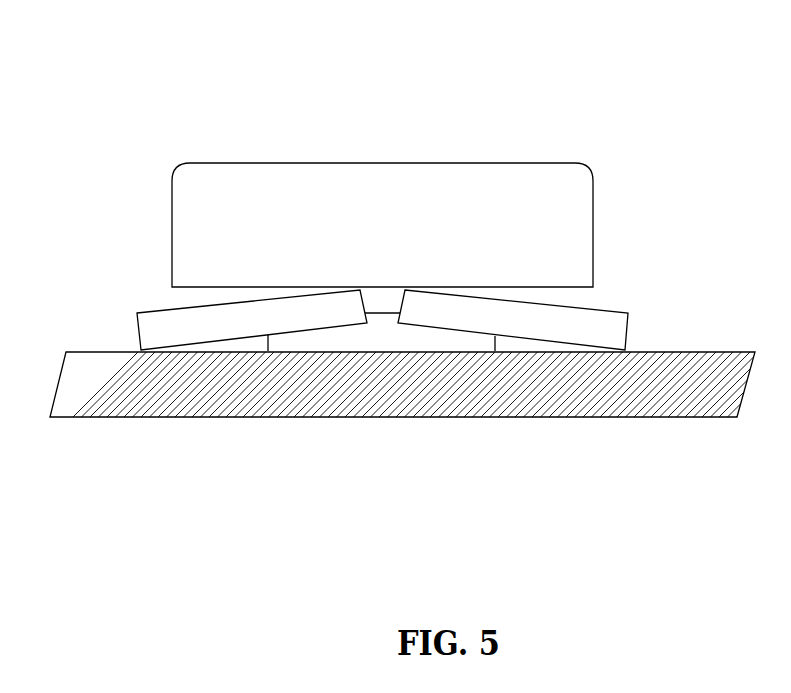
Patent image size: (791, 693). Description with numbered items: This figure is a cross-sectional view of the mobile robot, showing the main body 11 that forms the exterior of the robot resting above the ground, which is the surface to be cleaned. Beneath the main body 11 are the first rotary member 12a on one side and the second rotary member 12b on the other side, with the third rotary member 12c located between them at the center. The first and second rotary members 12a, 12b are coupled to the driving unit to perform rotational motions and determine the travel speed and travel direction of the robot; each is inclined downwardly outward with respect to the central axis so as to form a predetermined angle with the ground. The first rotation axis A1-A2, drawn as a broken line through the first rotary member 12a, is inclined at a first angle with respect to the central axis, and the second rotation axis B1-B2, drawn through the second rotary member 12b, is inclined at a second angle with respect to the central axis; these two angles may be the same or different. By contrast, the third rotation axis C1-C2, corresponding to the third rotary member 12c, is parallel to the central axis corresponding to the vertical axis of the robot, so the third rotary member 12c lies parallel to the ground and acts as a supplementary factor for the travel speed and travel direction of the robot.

The main body 11 is at (595, 207).
The first rotary member 12a is at (204, 284).
The second rotary member 12b is at (563, 284).
The third rotary member 12c is at (501, 400).
The first rotation axis end A1 is at (244, 290).
The first rotation axis end A2 is at (244, 290).
The second rotation axis end B1 is at (519, 290).
The second rotation axis end B2 is at (519, 290).
The third rotation axis end C1 is at (383, 290).
The third rotation axis end C2 is at (383, 290).